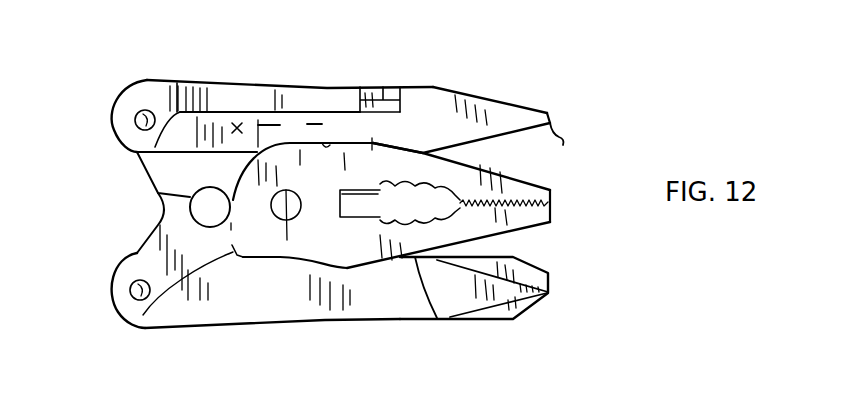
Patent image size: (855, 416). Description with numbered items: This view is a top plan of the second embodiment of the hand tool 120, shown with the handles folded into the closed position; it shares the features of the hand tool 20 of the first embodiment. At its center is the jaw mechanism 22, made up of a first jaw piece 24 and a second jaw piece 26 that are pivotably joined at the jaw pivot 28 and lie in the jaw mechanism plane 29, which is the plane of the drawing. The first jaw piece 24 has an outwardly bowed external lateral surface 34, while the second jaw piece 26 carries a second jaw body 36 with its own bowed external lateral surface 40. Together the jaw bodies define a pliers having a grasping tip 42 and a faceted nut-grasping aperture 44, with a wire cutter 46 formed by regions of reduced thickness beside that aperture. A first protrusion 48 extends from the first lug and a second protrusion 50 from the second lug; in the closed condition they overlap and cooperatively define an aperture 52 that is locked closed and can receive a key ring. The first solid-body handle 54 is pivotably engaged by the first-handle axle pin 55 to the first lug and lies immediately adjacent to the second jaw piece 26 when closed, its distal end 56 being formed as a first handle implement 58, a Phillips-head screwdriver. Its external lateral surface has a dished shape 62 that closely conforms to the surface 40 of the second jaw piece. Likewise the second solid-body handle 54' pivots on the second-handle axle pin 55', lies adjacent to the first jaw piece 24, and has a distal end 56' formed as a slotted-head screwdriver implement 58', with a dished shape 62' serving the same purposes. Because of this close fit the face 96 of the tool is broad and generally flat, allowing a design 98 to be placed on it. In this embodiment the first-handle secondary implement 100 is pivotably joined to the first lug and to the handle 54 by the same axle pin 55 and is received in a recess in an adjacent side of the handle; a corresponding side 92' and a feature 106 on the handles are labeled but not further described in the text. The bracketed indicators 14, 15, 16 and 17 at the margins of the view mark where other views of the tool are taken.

The first handle 14 is at (90, 98).
The second handle 15 is at (90, 308).
The section line 16 is at (602, 58).
The section line 17 is at (70, 78).
The hand tool 20 is at (105, 107).
The jaw mechanism 22 is at (552, 224).
The first jaw piece 24 is at (508, 182).
The second jaw piece 26 is at (370, 245).
The jaw pivot 28 is at (271, 206).
The jaw mechanism plane 29 is at (114, 214).
The first jaw piece external lateral surface 34 is at (372, 143).
The second jaw body 36 is at (497, 232).
The second jaw piece external lateral surface 40 is at (433, 318).
The grasping tip 42 is at (550, 193).
The faceted nut-grasping aperture 44 is at (350, 210).
The wire cutter 46 is at (348, 263).
The first protrusion 48 is at (168, 207).
The second protrusion 50 is at (157, 193).
The aperture 52 is at (203, 188).
The first solid-body handle 54 is at (461, 110).
The second solid-body handle 54' is at (407, 309).
The first-handle axle pin 55 is at (131, 97).
The second-handle axle pin 55' is at (119, 277).
The first solid-body handle distal end 56 is at (552, 101).
The second solid-body handle distal end 56' is at (546, 319).
The first handle implement 58 is at (570, 140).
The second handle implement 58' is at (577, 268).
The dished shape 62 is at (315, 100).
The dished shape 62' is at (351, 315).
The handle edge 92' is at (439, 360).
The face 96 is at (240, 137).
The design 98 is at (237, 255).
The first-handle secondary implement 100 is at (280, 92).
The handle strip edge 106 is at (298, 113).
The hand tool 120 is at (364, 49).